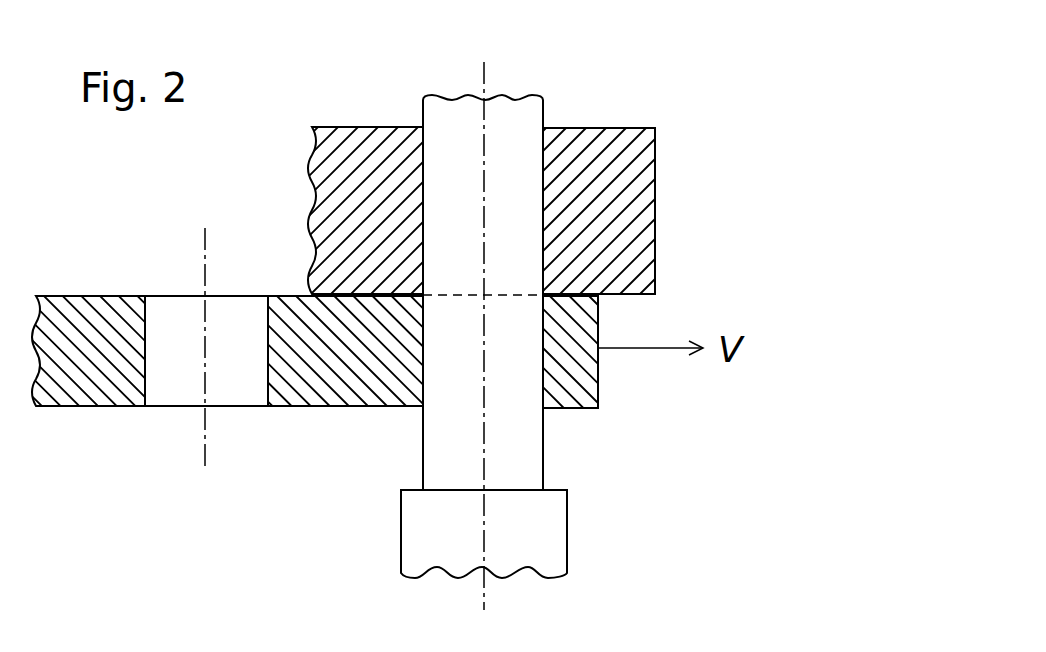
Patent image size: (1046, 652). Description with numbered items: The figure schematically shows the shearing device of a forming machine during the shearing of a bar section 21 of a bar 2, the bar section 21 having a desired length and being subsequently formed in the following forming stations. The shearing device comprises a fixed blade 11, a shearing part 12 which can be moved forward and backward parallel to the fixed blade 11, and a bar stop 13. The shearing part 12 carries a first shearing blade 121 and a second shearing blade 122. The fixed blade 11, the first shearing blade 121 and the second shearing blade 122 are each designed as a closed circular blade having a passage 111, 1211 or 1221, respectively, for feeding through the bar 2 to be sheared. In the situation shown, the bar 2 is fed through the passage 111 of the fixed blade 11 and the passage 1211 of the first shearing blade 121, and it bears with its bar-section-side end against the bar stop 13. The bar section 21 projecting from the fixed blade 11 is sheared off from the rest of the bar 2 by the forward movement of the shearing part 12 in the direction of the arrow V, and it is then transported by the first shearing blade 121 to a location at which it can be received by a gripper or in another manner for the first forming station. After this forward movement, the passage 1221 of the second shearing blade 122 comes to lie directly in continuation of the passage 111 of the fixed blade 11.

The bar 2 is at (552, 313).
The bar section 21 is at (523, 443).
The bar stop 13 is at (540, 533).
The fixed blade 11 is at (627, 207).
The passage 111 is at (422, 153).
The shearing part 12 is at (382, 363).
The first shearing blade 121 is at (418, 357).
The second shearing blade 122 is at (282, 327).
The passage 1211 is at (568, 410).
The passage 1221 is at (177, 382).